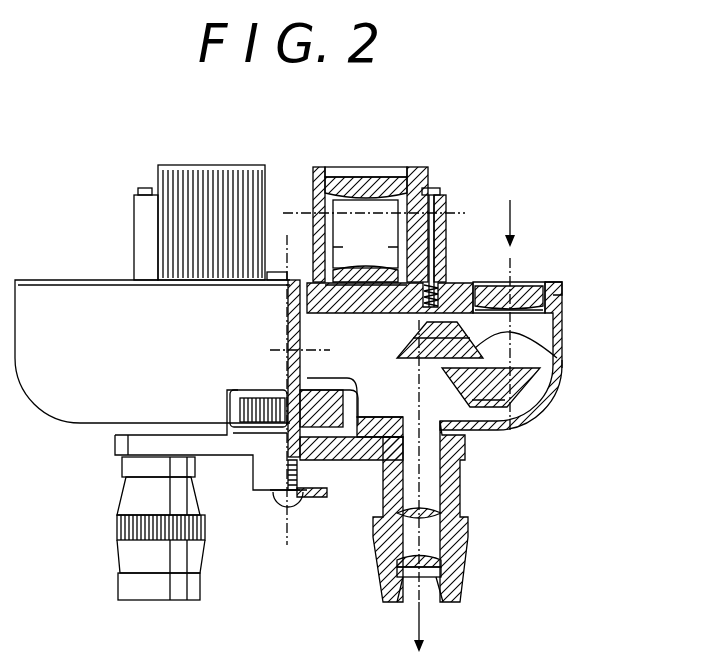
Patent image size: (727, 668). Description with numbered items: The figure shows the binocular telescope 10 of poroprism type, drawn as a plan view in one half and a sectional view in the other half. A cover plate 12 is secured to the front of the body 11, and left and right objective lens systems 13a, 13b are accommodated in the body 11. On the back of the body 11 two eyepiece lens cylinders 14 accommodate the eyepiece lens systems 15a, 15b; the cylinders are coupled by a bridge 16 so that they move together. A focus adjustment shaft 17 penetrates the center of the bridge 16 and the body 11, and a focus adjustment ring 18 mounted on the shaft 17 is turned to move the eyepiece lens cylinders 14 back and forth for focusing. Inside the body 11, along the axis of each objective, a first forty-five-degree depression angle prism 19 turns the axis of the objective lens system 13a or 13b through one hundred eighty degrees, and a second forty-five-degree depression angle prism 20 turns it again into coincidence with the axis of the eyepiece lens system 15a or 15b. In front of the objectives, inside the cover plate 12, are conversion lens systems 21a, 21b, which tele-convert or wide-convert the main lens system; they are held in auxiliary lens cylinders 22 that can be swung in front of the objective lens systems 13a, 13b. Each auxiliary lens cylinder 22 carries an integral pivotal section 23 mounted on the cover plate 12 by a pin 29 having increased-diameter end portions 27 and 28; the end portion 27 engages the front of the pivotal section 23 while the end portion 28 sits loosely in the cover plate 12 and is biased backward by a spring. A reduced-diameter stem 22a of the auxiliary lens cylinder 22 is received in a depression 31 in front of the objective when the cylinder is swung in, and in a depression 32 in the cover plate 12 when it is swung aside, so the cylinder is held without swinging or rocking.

The binocular telescope 10 is at (580, 300).
The body 11 is at (545, 400).
The cover plate 12 is at (457, 285).
The objective lens system 13a is at (525, 290).
The objective lens system 13b is at (520, 310).
The eyepiece lens cylinder 14 is at (132, 503).
The eyepiece lens system 15a is at (433, 495).
The eyepiece lens system 15b is at (435, 592).
The bridge 16 is at (223, 448).
The focus adjustment shaft 17 is at (310, 353).
The focus adjustment ring 18 is at (338, 428).
The first 45-degree depression angle prism 19 is at (530, 393).
The second 45-degree depression angle prism 20 is at (560, 367).
The conversion lens system 21a is at (393, 182).
The conversion lens system 21b is at (363, 268).
The auxiliary lens cylinder 22 is at (205, 178).
The reduced-diameter stem portion 22a is at (298, 243).
The pivotal section 23 is at (145, 227).
The increased-diameter end portion 27 is at (432, 190).
The increased-diameter end portion 28 is at (443, 207).
The pin 29 is at (445, 232).
The depression 31 is at (537, 282).
The depression 32 is at (403, 317).